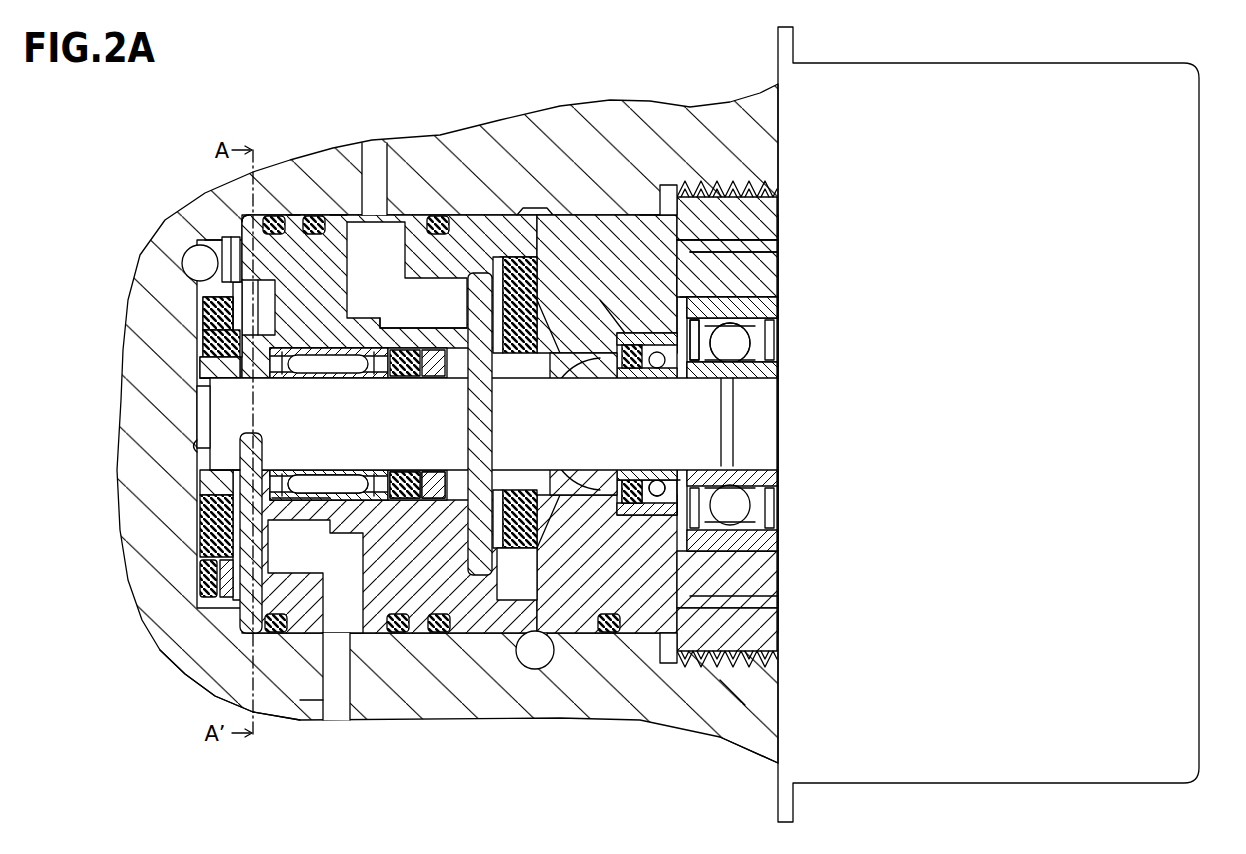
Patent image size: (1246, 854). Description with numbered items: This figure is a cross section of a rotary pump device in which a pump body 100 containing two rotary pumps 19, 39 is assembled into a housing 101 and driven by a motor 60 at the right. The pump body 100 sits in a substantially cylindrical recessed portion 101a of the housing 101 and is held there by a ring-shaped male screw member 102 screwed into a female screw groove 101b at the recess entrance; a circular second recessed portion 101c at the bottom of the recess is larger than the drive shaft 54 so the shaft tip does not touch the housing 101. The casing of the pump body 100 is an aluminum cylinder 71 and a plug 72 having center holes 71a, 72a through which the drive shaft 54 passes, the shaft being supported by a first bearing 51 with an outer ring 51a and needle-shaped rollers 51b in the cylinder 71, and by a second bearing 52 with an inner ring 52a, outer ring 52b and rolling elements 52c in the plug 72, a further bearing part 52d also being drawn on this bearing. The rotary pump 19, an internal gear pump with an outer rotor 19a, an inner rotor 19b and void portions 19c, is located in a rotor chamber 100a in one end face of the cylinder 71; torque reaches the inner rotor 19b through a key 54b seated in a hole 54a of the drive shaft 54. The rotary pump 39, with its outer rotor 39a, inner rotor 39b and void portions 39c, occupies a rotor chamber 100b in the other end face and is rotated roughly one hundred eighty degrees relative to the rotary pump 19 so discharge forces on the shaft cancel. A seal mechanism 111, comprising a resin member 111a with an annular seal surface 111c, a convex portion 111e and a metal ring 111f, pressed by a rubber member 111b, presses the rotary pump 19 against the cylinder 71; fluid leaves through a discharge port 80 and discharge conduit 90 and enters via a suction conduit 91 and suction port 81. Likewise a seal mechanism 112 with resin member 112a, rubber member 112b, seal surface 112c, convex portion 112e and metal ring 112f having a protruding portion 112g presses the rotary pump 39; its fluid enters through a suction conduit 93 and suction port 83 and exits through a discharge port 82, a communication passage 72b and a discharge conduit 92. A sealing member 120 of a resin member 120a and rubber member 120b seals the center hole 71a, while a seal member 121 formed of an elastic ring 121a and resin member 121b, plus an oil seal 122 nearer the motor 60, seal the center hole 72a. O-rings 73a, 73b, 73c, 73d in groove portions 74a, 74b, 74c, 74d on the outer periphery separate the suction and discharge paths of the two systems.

The pump body 100 is at (225, 200).
The rotor chamber 100a is at (260, 690).
The rotor chamber 100b is at (535, 210).
The housing 101 is at (236, 210).
The recessed portion 101a is at (212, 248).
The female screw groove 101b is at (770, 740).
The second recessed portion 101c is at (205, 455).
The male screw member 102 is at (740, 690).
The motor 60 is at (1204, 138).
The drive shaft 54 is at (230, 418).
The hole 54a is at (252, 520).
The key 54b is at (228, 560).
The discharge port 80 is at (230, 240).
The discharge conduit 90 is at (200, 258).
The suction port 83 is at (372, 160).
The suction conduit 93 is at (340, 213).
The suction conduit 91 is at (345, 705).
The discharge conduit 92 is at (548, 640).
The suction port 81 is at (337, 660).
The discharge port 82 is at (540, 670).
The cylinder 71 is at (375, 240).
The center hole 71a is at (400, 300).
The plug 72 is at (740, 195).
The center hole 72a is at (720, 652).
The communication passage 72b is at (668, 660).
The O-ring 73a is at (274, 216).
The O-ring 73b is at (314, 216).
The O-ring 73c is at (438, 216).
The O-ring 73d is at (608, 216).
The groove portion 74a is at (258, 216).
The groove portion 74b is at (295, 245).
The groove portion 74c is at (480, 290).
The groove portion 74d is at (650, 225).
The seal mechanism 111 is at (200, 340).
The resin member 111a is at (215, 345).
The rubber member 111b is at (215, 305).
The annular seal surface 111c is at (228, 322).
The convex portion 111e is at (210, 366).
The metal ring 111f is at (230, 410).
The seal mechanism 112 is at (575, 260).
The resin member 112a is at (520, 257).
The rubber member 112b is at (498, 260).
The annular seal surface 112c is at (478, 470).
The convex portion 112e is at (612, 240).
The metal ring 112f is at (670, 260).
The protruding portion 112g is at (700, 253).
The seal member 121 is at (898, 207).
The elastic ring 121a is at (695, 270).
The resin member 121b is at (700, 290).
The oil seal 122 is at (664, 518).
The second bearing 52 is at (898, 290).
The inner ring 52a is at (720, 375).
The outer ring 52b is at (720, 312).
The rolling element 52c is at (732, 343).
The seal 52d is at (695, 300).
The rotary pump 39 is at (465, 770).
The outer rotor 39a is at (665, 482).
The inner rotor 39b is at (628, 505).
The void portions 39c is at (652, 497).
The first bearing 51 is at (315, 806).
The outer ring 51a is at (300, 500).
The needle-shaped roller 51b is at (345, 500).
The sealing member 120 is at (368, 806).
The annular resin member 120a is at (405, 500).
The annular rubber member 120b is at (432, 500).
The rotary pump 19 is at (70, 602).
The outer rotor 19a is at (225, 575).
The inner rotor 19b is at (215, 530).
The void portions 19c is at (222, 512).